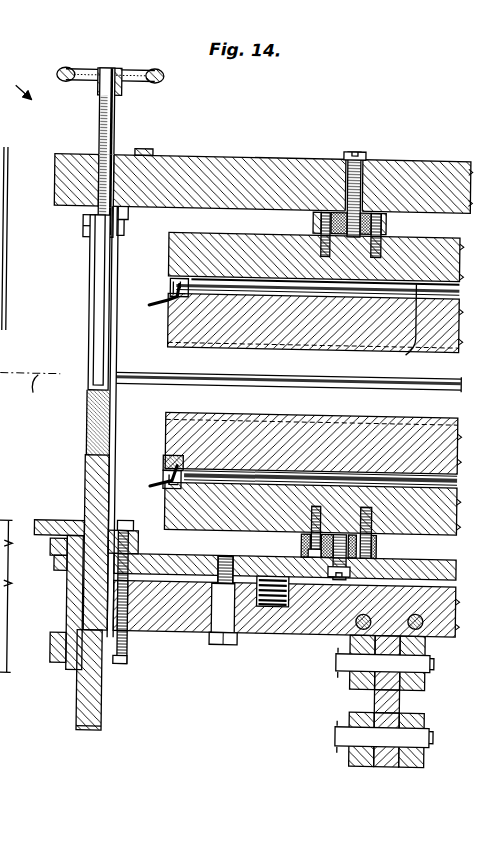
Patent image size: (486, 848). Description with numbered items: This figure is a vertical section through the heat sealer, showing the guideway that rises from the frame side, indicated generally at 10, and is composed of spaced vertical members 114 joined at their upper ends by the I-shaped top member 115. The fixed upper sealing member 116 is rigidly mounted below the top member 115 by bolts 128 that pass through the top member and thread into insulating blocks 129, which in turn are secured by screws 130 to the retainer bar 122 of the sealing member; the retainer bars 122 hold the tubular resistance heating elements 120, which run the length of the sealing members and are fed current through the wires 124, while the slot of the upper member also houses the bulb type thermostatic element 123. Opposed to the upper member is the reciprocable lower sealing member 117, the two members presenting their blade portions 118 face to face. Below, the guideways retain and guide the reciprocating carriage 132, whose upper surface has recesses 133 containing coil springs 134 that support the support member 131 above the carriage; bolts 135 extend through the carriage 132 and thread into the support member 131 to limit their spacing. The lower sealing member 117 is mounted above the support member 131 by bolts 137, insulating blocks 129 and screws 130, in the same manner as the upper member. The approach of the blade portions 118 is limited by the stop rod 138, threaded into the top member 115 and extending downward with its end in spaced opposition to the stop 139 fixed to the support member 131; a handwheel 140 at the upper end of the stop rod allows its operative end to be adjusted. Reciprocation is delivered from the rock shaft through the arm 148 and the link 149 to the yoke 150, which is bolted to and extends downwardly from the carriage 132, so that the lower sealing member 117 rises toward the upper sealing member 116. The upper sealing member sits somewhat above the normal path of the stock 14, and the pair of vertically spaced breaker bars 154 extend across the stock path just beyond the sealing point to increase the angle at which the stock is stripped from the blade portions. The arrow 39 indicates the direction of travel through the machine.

The frame 10 is at (69, 610).
The stock 14 is at (39, 393).
The direction arrow 39 is at (18, 80).
The vertical members 114 is at (112, 420).
The top member 115 is at (275, 163).
The upper sealing member 116 is at (344, 343).
The lower sealing member 117 is at (384, 399).
The blade portions 118 is at (218, 414).
The tubular resistance heating elements 120 is at (169, 284).
The retainer bars 122 is at (170, 250).
The bulb type thermostatic element 123 is at (405, 352).
The wires 124 is at (160, 485).
The bolts 128 is at (356, 170).
The insulating blocks 129 is at (385, 220).
The screws 130 is at (311, 220).
The support member 131 is at (206, 547).
The carriage 132 is at (306, 634).
The recesses 133 is at (291, 604).
The coil springs 134 is at (268, 608).
The bolts 135 is at (223, 645).
The bolts 137 is at (358, 561).
The stop rods 138 is at (100, 331).
The stops 139 is at (88, 488).
The handwheel 140 is at (160, 78).
The arm 148 is at (405, 715).
The link 149 is at (379, 700).
The yoke 150 is at (432, 650).
The breaker bars 154 is at (2, 377).